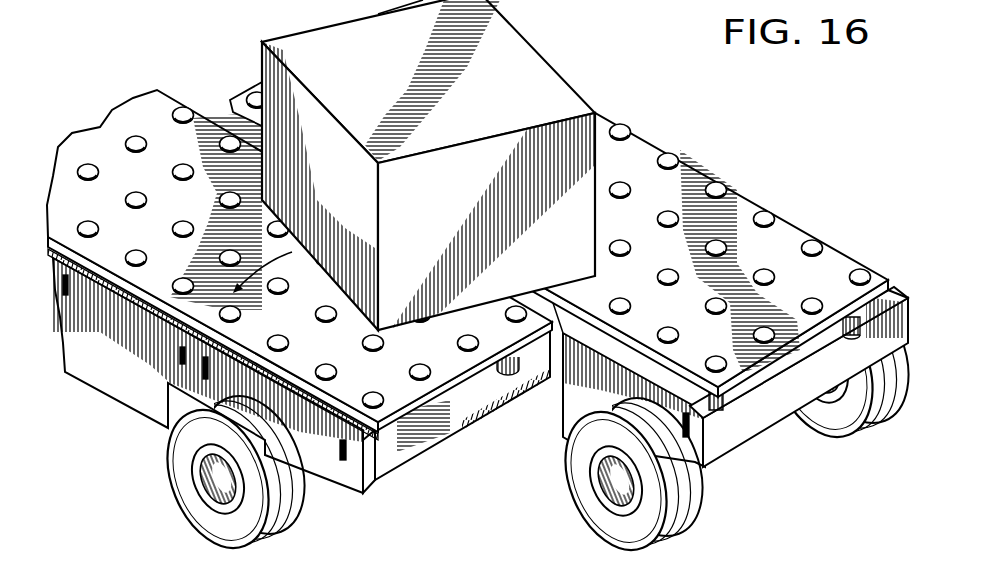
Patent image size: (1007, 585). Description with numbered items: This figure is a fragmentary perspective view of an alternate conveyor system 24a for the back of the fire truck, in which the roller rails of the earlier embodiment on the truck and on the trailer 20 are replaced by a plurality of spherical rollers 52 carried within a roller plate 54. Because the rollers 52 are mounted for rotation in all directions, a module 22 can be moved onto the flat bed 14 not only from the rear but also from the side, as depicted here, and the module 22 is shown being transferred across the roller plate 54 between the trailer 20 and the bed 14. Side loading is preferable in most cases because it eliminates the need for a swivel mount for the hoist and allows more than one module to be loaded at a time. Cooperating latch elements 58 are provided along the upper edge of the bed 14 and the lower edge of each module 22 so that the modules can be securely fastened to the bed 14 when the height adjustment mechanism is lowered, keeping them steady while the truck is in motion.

The flat bed 14 is at (146, 406).
The trailer 20 is at (768, 428).
The module 22 is at (532, 58).
The alternate conveyor system 24a is at (656, 255).
The spherical rollers 52 is at (707, 304).
The roller plate 54 is at (462, 356).
The latch elements 58 is at (66, 288).